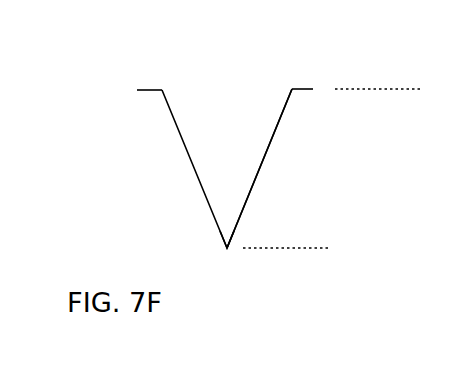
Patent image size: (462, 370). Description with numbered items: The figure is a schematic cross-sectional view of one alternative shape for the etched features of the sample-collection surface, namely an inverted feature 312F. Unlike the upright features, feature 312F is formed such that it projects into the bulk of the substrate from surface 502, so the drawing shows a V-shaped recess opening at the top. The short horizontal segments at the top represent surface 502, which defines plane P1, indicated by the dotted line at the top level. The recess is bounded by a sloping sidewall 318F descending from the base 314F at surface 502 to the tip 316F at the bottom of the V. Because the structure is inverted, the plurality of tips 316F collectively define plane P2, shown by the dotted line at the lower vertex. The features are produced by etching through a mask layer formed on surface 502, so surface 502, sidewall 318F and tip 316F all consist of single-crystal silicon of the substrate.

The feature 312F is at (124, 64).
The base 314F is at (257, 82).
The tip 316F is at (208, 241).
The sidewall 318F is at (281, 148).
The surface 502 is at (302, 89).
The plane P1 is at (357, 91).
The plane P2 is at (259, 250).